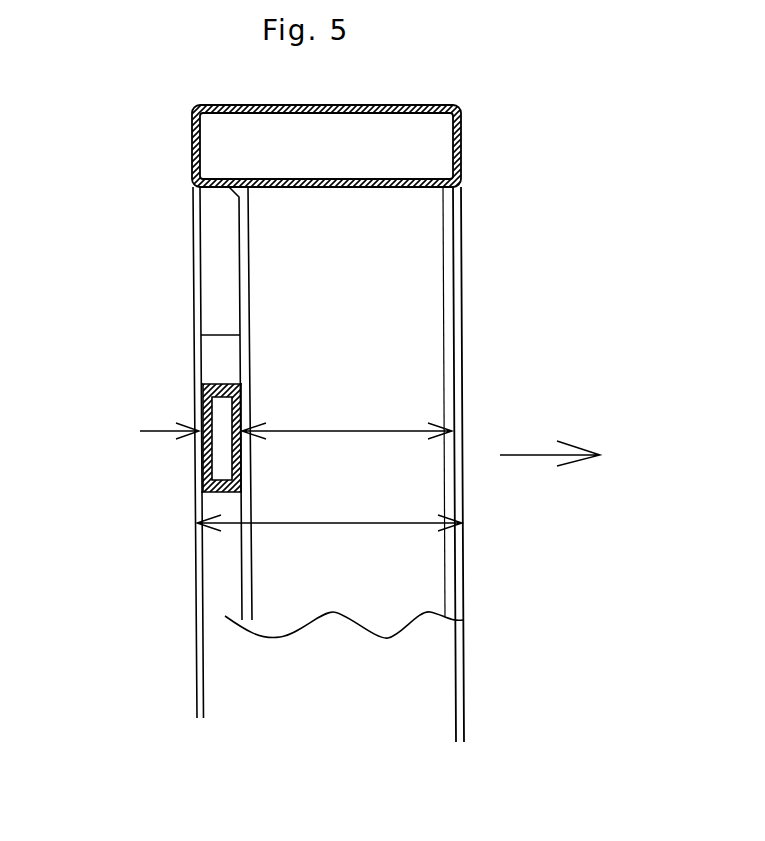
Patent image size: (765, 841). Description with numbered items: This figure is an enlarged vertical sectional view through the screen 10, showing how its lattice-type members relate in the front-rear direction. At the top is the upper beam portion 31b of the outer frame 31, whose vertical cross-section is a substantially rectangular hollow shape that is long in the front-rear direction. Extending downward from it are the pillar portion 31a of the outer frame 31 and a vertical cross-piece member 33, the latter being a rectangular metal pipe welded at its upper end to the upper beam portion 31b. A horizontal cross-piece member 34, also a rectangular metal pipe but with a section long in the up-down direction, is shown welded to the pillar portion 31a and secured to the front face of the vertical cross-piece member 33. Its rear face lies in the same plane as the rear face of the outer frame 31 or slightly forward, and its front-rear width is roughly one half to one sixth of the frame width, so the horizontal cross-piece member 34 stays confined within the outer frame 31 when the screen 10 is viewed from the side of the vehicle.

The screen 10 is at (158, 216).
The outer frame 31 is at (462, 136).
The pillar portion 31a is at (213, 570).
The upper beam portion 31b is at (461, 157).
The vertical cross-piece member 33 is at (405, 376).
The horizontal cross-piece member 34 is at (204, 407).